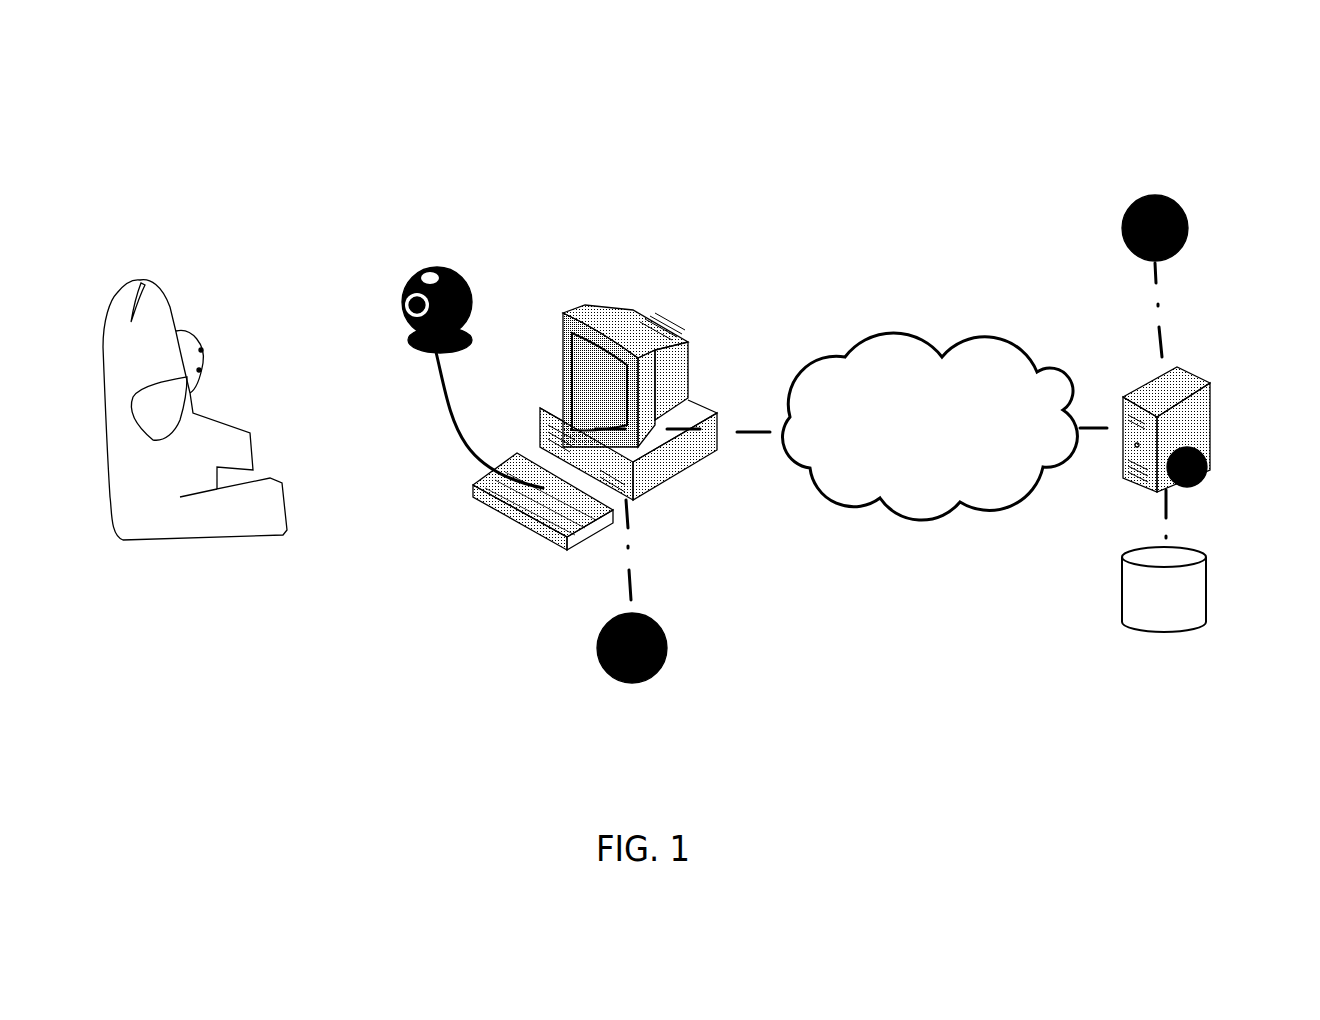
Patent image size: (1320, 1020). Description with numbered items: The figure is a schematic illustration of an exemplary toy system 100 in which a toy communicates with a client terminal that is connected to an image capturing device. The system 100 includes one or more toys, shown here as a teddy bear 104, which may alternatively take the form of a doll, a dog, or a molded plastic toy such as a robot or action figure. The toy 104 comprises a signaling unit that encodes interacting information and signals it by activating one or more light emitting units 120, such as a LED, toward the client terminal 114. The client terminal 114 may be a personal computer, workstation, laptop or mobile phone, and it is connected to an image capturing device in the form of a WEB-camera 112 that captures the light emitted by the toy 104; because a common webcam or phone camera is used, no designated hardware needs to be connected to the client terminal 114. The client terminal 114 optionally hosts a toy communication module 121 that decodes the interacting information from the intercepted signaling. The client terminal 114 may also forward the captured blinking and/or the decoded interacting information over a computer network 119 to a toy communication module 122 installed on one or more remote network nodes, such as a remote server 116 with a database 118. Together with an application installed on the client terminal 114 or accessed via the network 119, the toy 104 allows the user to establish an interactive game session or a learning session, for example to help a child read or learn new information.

The toy system 100 is at (595, 282).
The toy 104 is at (140, 272).
The WEB-camera 112 is at (435, 251).
The client terminal 114 is at (610, 552).
The remote server 116 is at (1178, 423).
The database 118 is at (1166, 641).
The computer network 119 is at (940, 307).
The light emitting unit 120 is at (189, 320).
The toy communication module 121 is at (587, 648).
The toy communication module 122 is at (1202, 224).